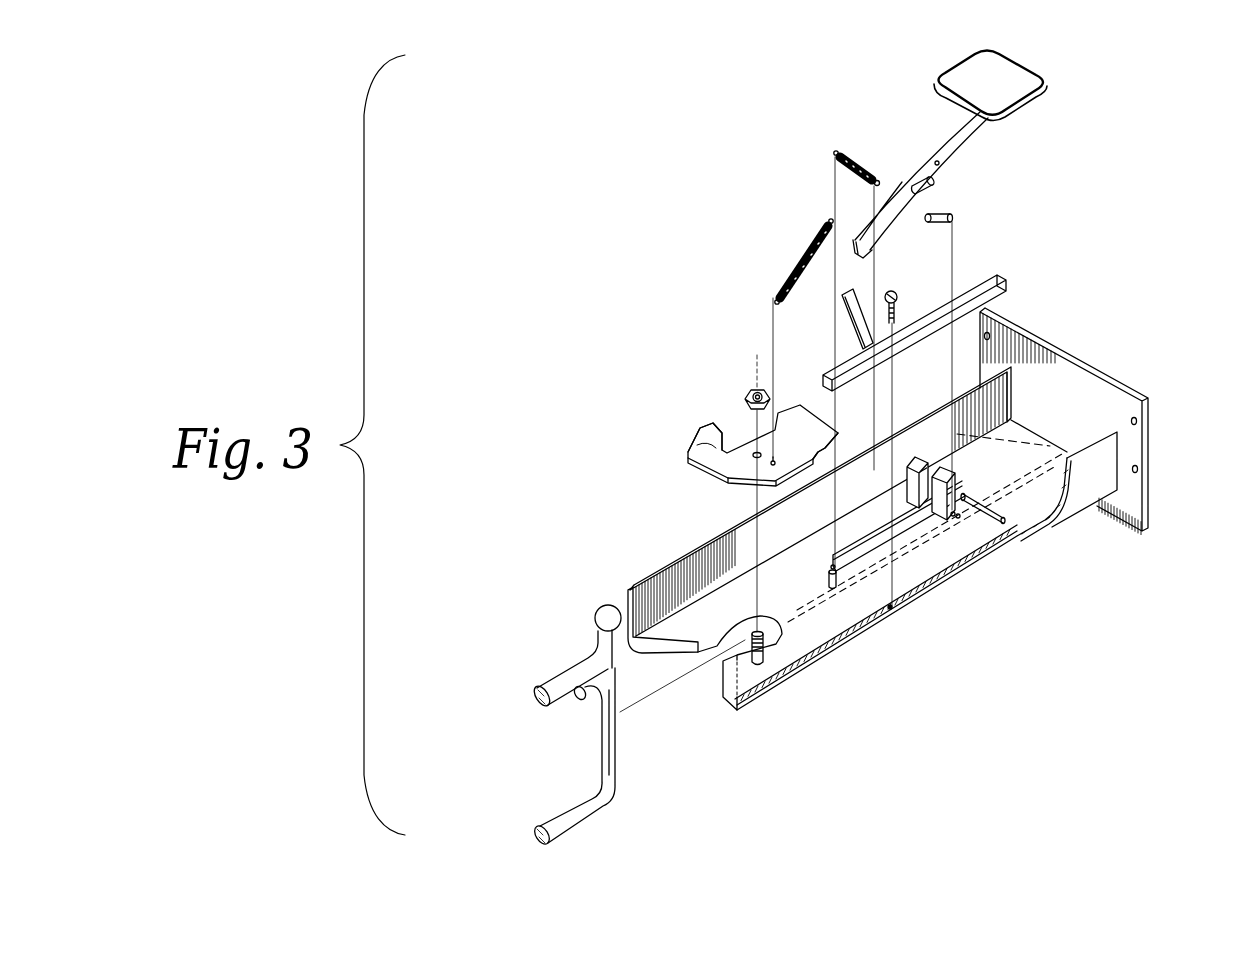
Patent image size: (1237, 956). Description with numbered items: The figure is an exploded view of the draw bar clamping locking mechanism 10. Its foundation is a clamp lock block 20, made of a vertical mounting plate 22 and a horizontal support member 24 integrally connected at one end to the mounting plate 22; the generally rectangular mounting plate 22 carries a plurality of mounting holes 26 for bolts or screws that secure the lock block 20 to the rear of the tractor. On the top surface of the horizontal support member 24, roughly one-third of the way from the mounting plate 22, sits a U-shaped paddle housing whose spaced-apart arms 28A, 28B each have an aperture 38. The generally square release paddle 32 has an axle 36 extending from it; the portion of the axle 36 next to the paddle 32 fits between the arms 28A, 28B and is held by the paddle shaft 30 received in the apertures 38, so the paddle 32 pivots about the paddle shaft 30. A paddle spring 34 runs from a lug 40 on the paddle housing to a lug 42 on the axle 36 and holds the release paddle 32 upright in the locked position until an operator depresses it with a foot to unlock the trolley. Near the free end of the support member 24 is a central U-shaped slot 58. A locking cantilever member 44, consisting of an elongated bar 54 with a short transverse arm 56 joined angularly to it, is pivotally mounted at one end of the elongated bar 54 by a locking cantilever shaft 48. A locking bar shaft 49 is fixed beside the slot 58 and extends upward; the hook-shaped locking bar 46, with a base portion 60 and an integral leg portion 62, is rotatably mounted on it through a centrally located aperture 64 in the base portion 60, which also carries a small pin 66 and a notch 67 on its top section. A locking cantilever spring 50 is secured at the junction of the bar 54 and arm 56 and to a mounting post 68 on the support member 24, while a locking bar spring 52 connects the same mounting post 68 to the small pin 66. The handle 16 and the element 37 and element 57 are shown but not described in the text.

The draw bar clamping locking mechanism 10 is at (678, 302).
The handle 16 is at (572, 673).
The clamp lock block 20 is at (1082, 505).
The vertical mounting plate 22 is at (1084, 427).
The horizontal support member 24 is at (1055, 524).
The mounting holes 26 is at (987, 338).
The arm 28A is at (918, 470).
The arm 28B is at (935, 510).
The paddle shaft 30 is at (958, 485).
The release paddle 32 is at (960, 66).
The paddle spring 34 is at (953, 216).
The axle 36 is at (920, 158).
The arm end 37 is at (855, 243).
The apertures 38 is at (928, 475).
The lug 40 is at (950, 512).
The lug 42 is at (934, 182).
The locking cantilever member 44 is at (1004, 270).
The locking bar 46 is at (794, 394).
The locking cantilever shaft 48 is at (891, 292).
The locking bar shaft 49 is at (760, 650).
The locking cantilever spring 50 is at (853, 150).
The locking bar spring 52 is at (798, 262).
The elongated bar 54 is at (932, 312).
The short transverse arm 56 is at (868, 294).
The spring anchor 57 is at (840, 275).
The U-shaped slot 58 is at (703, 642).
The base portion 60 is at (808, 420).
The leg portion 62 is at (700, 440).
The aperture 64 is at (756, 459).
The small pin 66 is at (771, 466).
The notch 67 is at (826, 436).
The mounting post 68 is at (838, 590).